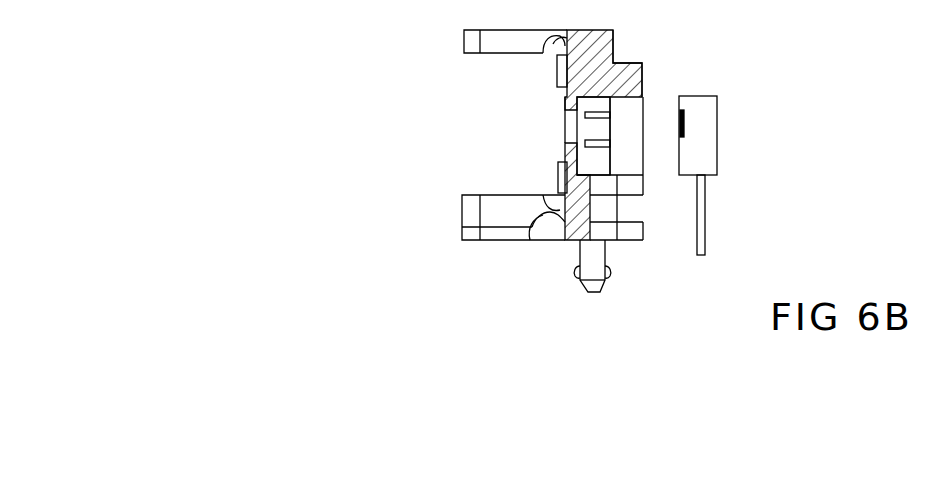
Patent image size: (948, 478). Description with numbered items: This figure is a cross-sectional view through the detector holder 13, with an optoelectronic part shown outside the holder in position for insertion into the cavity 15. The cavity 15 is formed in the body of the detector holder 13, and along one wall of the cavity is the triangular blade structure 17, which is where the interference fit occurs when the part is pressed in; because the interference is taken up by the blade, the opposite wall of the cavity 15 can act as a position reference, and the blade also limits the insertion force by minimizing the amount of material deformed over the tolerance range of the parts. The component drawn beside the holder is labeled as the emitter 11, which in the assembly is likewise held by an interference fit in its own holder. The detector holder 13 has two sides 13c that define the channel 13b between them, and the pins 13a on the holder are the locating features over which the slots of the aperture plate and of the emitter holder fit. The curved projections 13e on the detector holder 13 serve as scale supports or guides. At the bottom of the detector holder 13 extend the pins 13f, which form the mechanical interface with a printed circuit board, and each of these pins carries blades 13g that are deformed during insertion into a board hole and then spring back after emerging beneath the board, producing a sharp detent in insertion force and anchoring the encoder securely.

The emitter 11 is at (717, 148).
The detector holder 13 is at (494, 243).
The pins 13a is at (545, 30).
The channel 13b is at (506, 167).
The sides 13c is at (464, 41).
The curved projections 13e is at (557, 78).
The pins 13f is at (573, 260).
The blades 13g is at (612, 270).
The cavity 15 is at (635, 96).
The triangular blade structure 17 is at (597, 153).